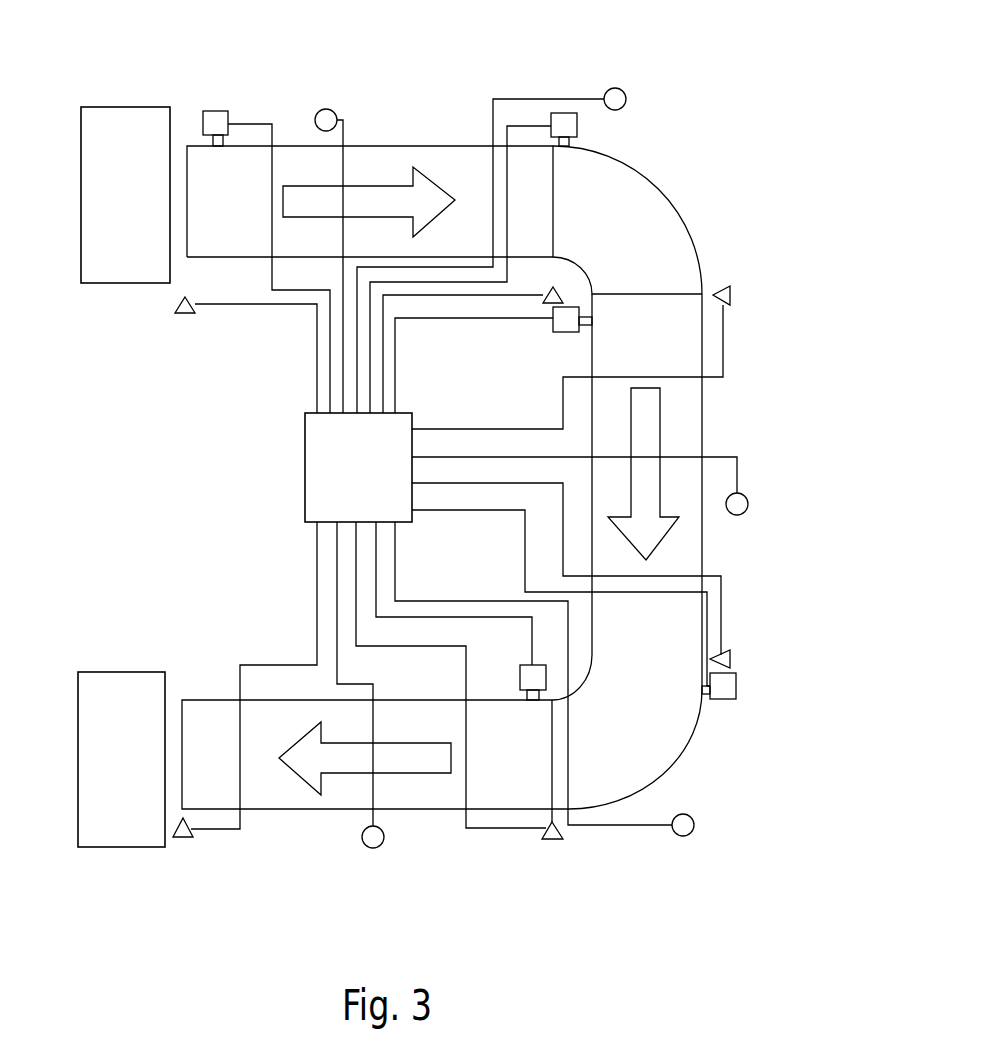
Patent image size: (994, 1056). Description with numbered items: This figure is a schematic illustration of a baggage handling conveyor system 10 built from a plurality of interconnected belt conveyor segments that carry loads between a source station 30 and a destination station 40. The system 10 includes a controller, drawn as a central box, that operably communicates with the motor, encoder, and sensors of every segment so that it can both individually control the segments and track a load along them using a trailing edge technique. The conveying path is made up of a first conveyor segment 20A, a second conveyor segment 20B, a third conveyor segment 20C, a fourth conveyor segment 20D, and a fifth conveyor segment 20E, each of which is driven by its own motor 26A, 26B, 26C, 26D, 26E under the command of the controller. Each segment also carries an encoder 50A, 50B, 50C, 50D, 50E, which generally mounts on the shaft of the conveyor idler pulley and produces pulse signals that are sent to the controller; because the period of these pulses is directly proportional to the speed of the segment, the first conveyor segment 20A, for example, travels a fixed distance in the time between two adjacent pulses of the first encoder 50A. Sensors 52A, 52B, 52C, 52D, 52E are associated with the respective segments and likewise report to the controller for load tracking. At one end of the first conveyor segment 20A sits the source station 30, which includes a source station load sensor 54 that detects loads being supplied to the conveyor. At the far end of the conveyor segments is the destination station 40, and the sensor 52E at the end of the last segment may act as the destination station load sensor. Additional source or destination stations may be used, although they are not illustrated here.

The conveyor system 10 is at (457, 80).
The first conveyor segment 20A is at (395, 146).
The second conveyor segment 20B is at (658, 183).
The third conveyor segment 20C is at (702, 410).
The fourth conveyor segment 20D is at (683, 747).
The fifth conveyor segment 20E is at (422, 806).
The motor 26A is at (218, 111).
The motor 26B is at (577, 130).
The motor 26C is at (562, 333).
The motor 26D is at (722, 700).
The motor 26E is at (520, 680).
The source station 30 is at (145, 107).
The destination station 40 is at (128, 848).
The first encoder 50A is at (333, 110).
The encoder 50B is at (622, 90).
The encoder 50C is at (748, 503).
The encoder 50D is at (692, 833).
The encoder 50E is at (373, 849).
The sensor 52A is at (557, 288).
The sensor 52B is at (730, 296).
The sensor 52C is at (730, 660).
The sensor 52D is at (555, 840).
The sensor 52E is at (185, 840).
The source station load sensor 54 is at (185, 315).